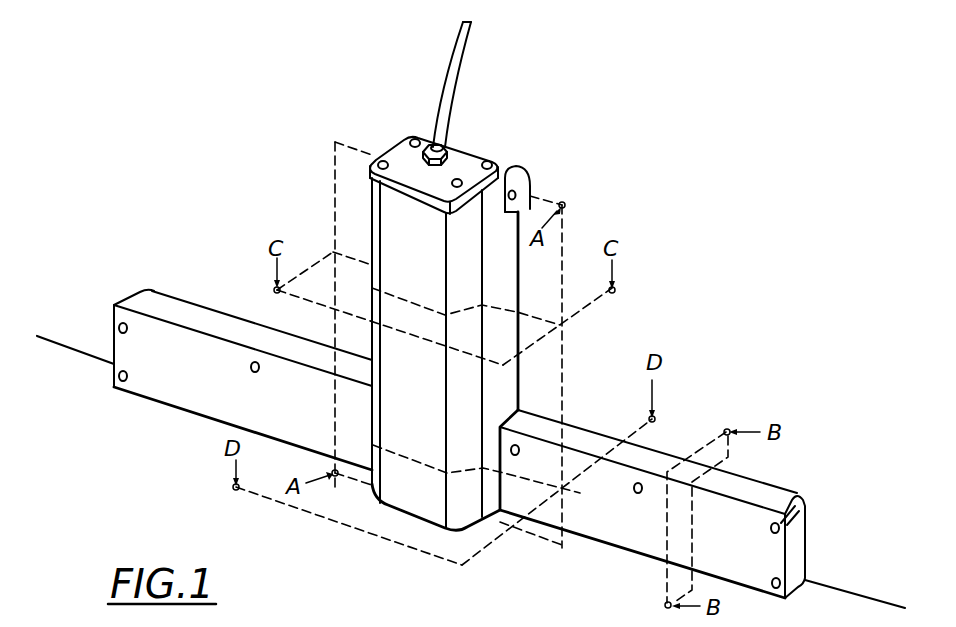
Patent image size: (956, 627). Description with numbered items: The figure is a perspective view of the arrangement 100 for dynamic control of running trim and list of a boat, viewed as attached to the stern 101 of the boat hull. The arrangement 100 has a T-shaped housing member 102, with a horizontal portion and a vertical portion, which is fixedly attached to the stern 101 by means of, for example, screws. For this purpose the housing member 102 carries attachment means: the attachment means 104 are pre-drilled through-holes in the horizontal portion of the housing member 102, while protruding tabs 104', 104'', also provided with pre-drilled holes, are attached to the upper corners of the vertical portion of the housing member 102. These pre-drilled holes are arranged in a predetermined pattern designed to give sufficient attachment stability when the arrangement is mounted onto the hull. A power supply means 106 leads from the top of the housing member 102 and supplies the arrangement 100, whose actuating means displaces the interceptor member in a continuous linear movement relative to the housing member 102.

The arrangement 100 is at (340, 80).
The stern 101 is at (87, 333).
The housing member 102 is at (400, 235).
The attachment means 104 is at (243, 341).
The protruding tab 104' is at (668, 504).
The protruding tab 104'' is at (569, 162).
The power supply means 106 is at (452, 108).